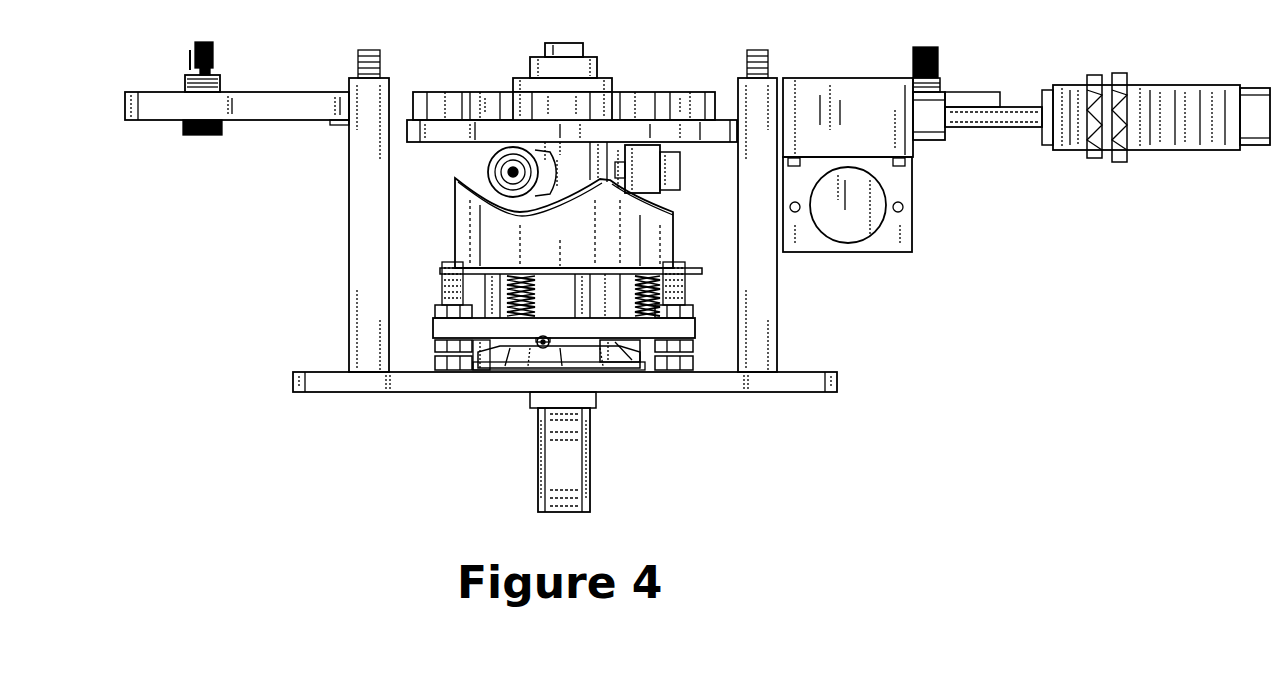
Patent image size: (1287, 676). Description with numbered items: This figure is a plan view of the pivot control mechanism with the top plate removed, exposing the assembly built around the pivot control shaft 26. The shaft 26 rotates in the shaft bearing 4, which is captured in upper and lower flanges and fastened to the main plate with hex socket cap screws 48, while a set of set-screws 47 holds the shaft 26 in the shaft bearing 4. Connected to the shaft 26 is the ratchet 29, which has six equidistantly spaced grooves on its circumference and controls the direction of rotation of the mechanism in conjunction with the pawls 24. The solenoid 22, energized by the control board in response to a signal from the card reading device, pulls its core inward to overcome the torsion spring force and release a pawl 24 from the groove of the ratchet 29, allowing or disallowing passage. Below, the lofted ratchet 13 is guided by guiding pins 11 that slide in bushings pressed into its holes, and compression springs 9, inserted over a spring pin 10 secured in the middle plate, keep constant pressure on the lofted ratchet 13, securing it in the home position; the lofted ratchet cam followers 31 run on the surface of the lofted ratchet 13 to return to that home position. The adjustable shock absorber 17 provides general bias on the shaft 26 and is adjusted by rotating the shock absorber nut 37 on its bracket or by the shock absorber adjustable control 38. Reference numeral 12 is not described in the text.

The shaft bearing 4 is at (530, 348).
The compression springs 9 is at (523, 318).
The spring pin 10 is at (523, 322).
The guiding pins 11 is at (508, 285).
The upper plate 12 is at (475, 277).
The lofted ratchet 13 is at (571, 236).
The adjustable shock absorber 17 is at (1178, 138).
The solenoid 22 is at (862, 234).
The pawls 24 is at (321, 98).
The pivot control shaft 26 is at (576, 476).
The ratchet 29 is at (500, 90).
The lofted ratchet cam followers 31 is at (490, 165).
The shock absorber nut 37 is at (1127, 164).
The shock absorber adjustable control 38 is at (1260, 142).
The set-screws 47 is at (550, 347).
The hex socket cap screws 48 is at (613, 362).